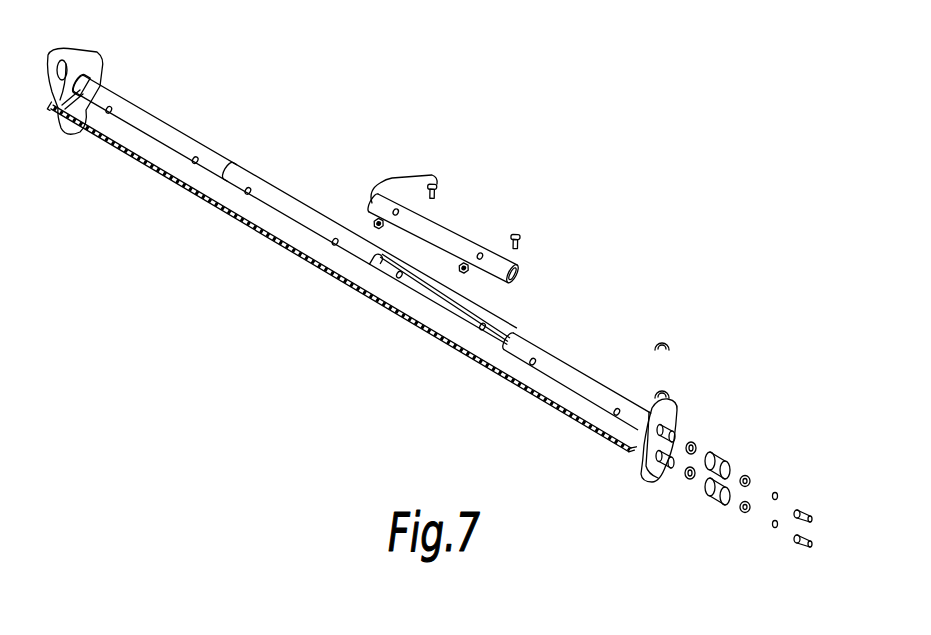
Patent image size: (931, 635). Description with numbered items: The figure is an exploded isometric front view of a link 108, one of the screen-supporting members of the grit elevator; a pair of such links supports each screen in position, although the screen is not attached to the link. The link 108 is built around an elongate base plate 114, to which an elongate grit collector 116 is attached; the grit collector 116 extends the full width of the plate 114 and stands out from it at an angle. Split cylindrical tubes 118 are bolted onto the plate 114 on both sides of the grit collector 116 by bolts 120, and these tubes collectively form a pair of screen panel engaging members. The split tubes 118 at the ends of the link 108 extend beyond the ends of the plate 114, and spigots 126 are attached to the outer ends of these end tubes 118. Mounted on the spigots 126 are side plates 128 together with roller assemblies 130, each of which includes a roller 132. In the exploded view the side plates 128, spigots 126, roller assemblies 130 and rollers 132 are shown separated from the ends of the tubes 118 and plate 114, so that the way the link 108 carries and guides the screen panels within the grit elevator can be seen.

The link 108 is at (198, 214).
The elongate base plate 114 is at (478, 318).
The elongate grit collector 116 is at (553, 396).
The split cylindrical tube 118 is at (442, 222).
The bolt 120 is at (392, 192).
The spigot 126 is at (669, 430).
The side plate 128 is at (98, 53).
The roller assembly 130 is at (827, 504).
The roller 132 is at (46, 58).